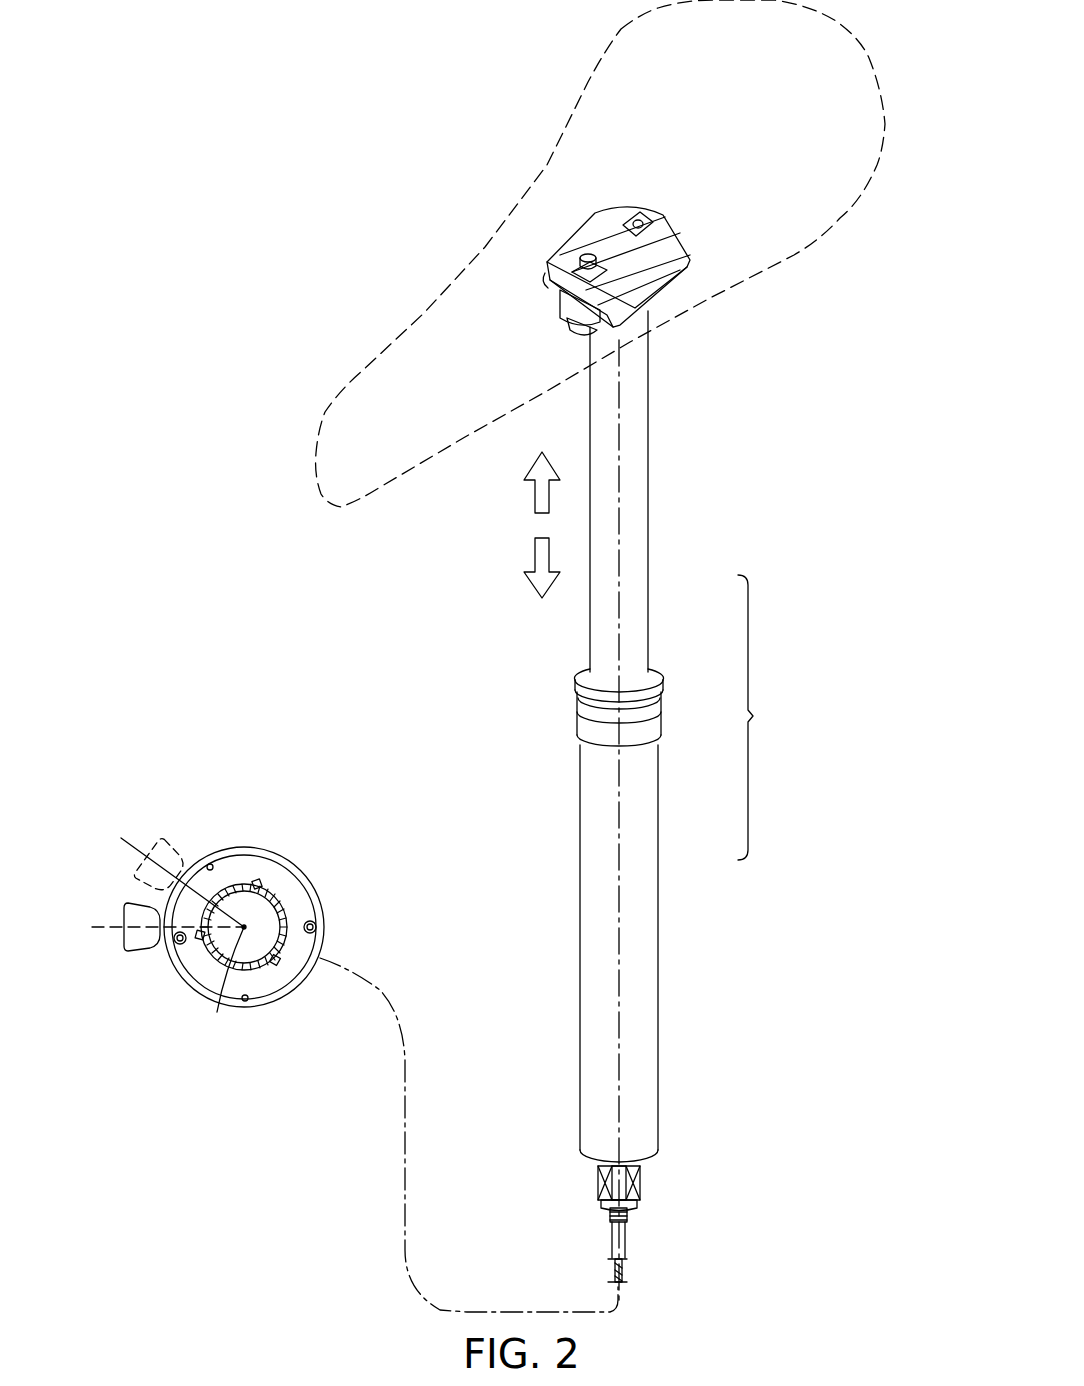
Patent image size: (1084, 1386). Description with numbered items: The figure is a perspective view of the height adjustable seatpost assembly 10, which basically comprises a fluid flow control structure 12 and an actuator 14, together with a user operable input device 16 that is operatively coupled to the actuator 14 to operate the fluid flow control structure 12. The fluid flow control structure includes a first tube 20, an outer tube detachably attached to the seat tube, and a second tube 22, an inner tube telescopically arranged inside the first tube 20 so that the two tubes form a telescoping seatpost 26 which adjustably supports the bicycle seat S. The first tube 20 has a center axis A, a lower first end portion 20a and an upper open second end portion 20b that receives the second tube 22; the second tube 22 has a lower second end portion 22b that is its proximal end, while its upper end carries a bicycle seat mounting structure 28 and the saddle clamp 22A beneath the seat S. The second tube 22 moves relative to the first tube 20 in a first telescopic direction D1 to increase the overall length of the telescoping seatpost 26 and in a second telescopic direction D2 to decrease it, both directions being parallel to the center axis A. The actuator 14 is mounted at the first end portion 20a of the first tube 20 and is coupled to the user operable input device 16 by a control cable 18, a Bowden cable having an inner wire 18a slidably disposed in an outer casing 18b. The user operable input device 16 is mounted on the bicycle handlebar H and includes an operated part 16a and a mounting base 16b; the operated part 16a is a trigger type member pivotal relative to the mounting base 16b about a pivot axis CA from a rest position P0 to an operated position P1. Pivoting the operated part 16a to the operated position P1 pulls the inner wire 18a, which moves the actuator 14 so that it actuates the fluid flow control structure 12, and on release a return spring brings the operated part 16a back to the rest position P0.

The bicycle seat S is at (850, 42).
The height adjustable seatpost assembly 10 is at (800, 384).
The fluid flow control structure 12 is at (656, 446).
The actuator 14 is at (660, 1188).
The user operable input device 16 is at (291, 850).
The operated part 16a is at (140, 950).
The mounting base 16b is at (277, 1003).
The control cable 18 is at (410, 1107).
The inner wire 18a is at (624, 1275).
The outer casing 18b is at (626, 1236).
The first tube 20 is at (660, 836).
The first end portion 20a is at (656, 1152).
The second end portion 20b is at (578, 720).
The second tube 22 is at (657, 599).
The saddle clamp 22A is at (655, 312).
The second end portion 22b is at (590, 652).
The telescoping seatpost 26 is at (761, 717).
The bicycle seat mounting structure 28 is at (575, 320).
The center axis A is at (622, 518).
The pivot axis CA is at (223, 984).
The first telescopic direction D1 is at (535, 500).
The second telescopic direction D2 is at (535, 552).
The bicycle handlebar H is at (283, 900).
The rest position P0 is at (105, 932).
The operated position P1 is at (138, 843).